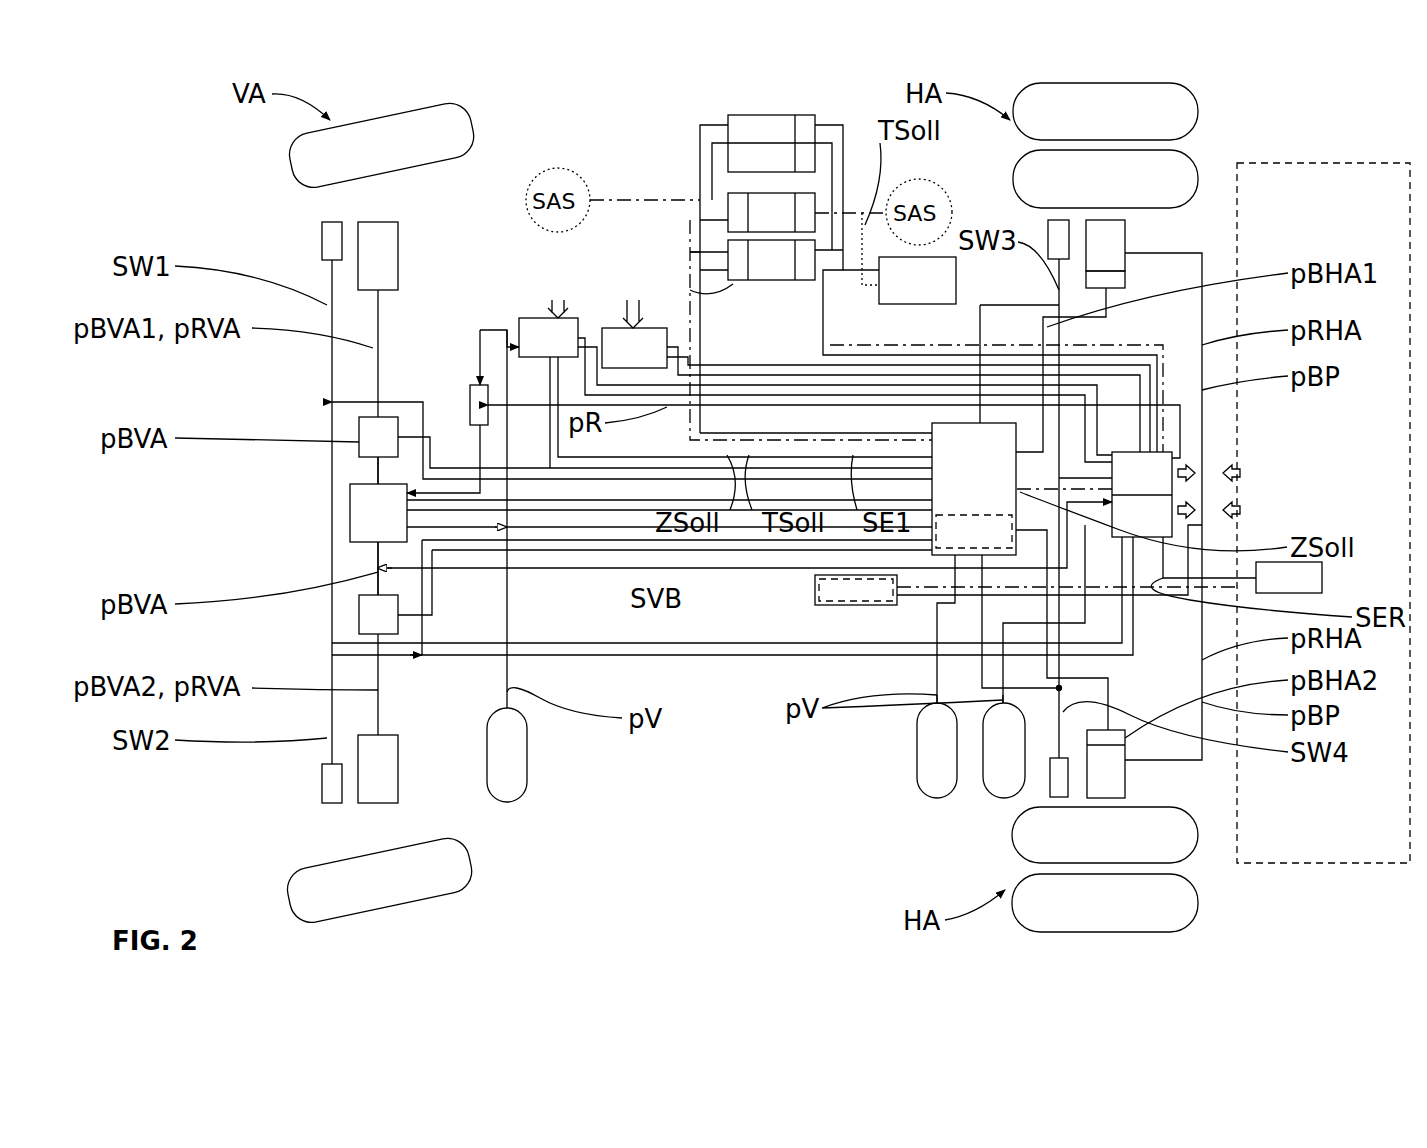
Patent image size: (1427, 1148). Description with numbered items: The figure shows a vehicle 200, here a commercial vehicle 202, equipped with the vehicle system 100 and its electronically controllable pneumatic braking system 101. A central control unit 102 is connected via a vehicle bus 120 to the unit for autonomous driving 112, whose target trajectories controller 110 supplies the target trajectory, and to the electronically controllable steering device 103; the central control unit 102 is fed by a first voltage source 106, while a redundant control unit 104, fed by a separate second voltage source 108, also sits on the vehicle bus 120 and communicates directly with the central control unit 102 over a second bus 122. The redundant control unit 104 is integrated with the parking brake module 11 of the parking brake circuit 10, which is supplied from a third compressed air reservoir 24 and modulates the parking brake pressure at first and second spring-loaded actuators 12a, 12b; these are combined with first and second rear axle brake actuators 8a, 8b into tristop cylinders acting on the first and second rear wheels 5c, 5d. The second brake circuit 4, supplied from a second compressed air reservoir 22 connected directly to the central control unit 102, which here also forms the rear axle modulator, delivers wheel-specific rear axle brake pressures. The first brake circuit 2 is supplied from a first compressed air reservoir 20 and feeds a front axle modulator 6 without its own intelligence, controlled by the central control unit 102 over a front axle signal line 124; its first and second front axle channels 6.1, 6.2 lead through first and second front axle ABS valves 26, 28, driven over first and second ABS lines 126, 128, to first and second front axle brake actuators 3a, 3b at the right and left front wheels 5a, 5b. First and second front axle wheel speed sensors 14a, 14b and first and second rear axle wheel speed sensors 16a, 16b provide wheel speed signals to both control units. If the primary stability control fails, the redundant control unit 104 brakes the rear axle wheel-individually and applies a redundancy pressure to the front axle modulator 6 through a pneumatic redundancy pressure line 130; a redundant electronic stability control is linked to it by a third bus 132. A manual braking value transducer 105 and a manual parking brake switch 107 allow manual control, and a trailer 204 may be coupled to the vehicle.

The vehicle 200 is at (212, 165).
The commercial vehicle 202 is at (143, 83).
The vehicle system 100 is at (822, 259).
The electronically controllable pneumatic braking system 101 is at (573, 81).
The unit for autonomous driving 112 is at (770, 115).
The target trajectories controller 110 is at (747, 81).
The first voltage source 106 is at (733, 292).
The second voltage source 108 is at (808, 283).
The vehicle bus 120 is at (690, 252).
The electronically controllable steering device 103 is at (917, 280).
The manual braking value transducer 105 is at (815, 384).
The manual parking brake switch 107 is at (876, 376).
The central control unit 102 is at (996, 489).
The redundant control unit 104 is at (1165, 489).
The parking brake module 11 is at (1144, 516).
The second bus 122 is at (1030, 488).
The front axle signal line 124 is at (578, 515).
The first ABS line 126 is at (437, 450).
The second ABS line 128 is at (432, 600).
The pneumatic redundancy pressure line 130 is at (520, 403).
The third bus 132 is at (920, 608).
The right front wheel 5a is at (462, 160).
The left front wheel 5b is at (475, 865).
The first rear wheel 5c is at (1198, 112).
The second rear wheel 5d is at (1198, 890).
The first front axle brake actuator 3a is at (398, 250).
The second front axle brake actuator 3b is at (398, 765).
The first front axle wheel speed sensor 14a is at (322, 240).
The second front axle wheel speed sensor 14b is at (322, 783).
The first rear axle wheel speed sensor 16a is at (1048, 233).
The second rear axle wheel speed sensor 16b is at (1059, 797).
The first spring-loaded actuator 12a is at (1125, 238).
The second spring-loaded actuator 12b is at (1125, 780).
The first rear axle brake actuator 8a is at (1125, 280).
The second rear axle brake actuator 8b is at (1125, 745).
The first front axle ABS valve 26 is at (359, 428).
The second front axle ABS valve 28 is at (359, 614).
The front axle modulator 6 is at (350, 512).
The first front axle channel 6.1 is at (378, 484).
The second front axle channel 6.2 is at (378, 566).
The first brake circuit 2 is at (558, 725).
The first compressed air reservoir 20 is at (525, 795).
The second brake circuit 4 is at (833, 725).
The second compressed air reservoir 22 is at (910, 760).
The third compressed air reservoir 24 is at (993, 800).
The parking brake circuit 10 is at (960, 810).
The trailer 204 is at (1330, 165).